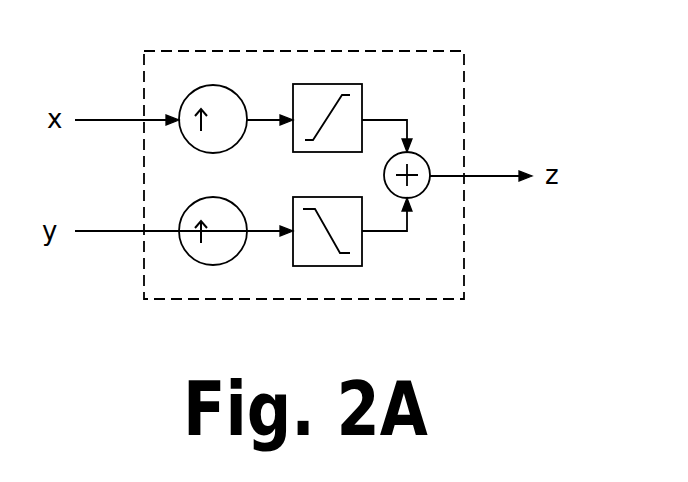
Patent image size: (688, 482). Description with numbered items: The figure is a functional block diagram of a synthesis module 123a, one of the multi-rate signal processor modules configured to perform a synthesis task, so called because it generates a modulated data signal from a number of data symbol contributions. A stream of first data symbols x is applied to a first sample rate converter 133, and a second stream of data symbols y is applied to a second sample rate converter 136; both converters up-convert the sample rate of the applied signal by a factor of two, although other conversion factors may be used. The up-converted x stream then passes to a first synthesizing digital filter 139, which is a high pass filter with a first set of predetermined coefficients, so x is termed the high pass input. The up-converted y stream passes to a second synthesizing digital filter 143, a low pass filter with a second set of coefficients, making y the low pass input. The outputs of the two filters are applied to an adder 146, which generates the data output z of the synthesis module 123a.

The synthesis module 123a is at (480, 232).
The first sample rate converter 133 is at (213, 72).
The second sample rate converter 136 is at (213, 278).
The first synthesizing digital filter 139 is at (327, 72).
The second synthesizing digital filter 143 is at (330, 287).
The adder 146 is at (430, 140).